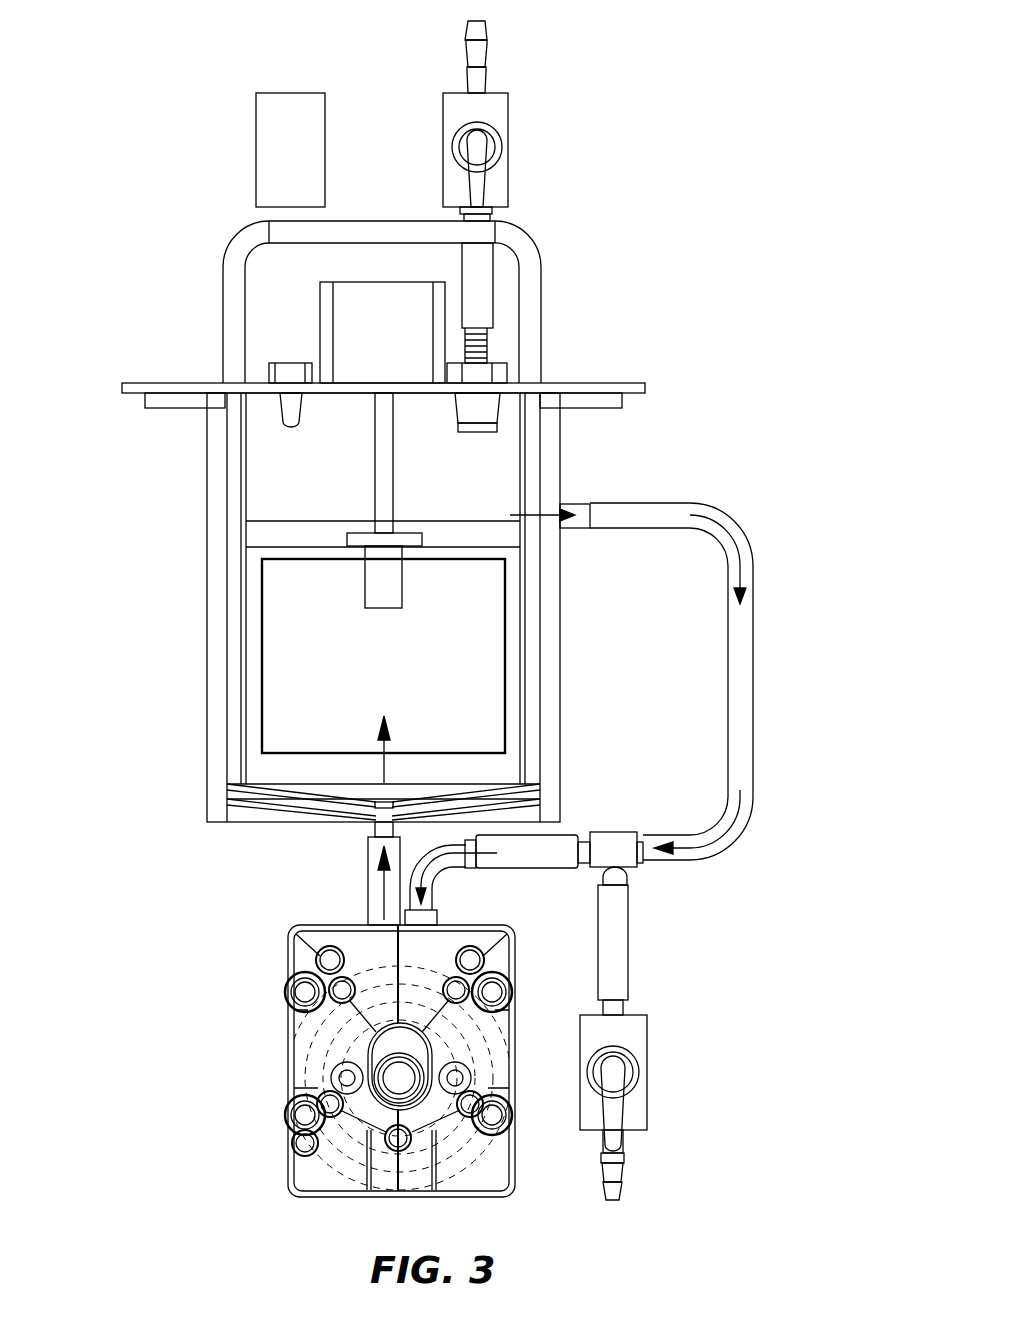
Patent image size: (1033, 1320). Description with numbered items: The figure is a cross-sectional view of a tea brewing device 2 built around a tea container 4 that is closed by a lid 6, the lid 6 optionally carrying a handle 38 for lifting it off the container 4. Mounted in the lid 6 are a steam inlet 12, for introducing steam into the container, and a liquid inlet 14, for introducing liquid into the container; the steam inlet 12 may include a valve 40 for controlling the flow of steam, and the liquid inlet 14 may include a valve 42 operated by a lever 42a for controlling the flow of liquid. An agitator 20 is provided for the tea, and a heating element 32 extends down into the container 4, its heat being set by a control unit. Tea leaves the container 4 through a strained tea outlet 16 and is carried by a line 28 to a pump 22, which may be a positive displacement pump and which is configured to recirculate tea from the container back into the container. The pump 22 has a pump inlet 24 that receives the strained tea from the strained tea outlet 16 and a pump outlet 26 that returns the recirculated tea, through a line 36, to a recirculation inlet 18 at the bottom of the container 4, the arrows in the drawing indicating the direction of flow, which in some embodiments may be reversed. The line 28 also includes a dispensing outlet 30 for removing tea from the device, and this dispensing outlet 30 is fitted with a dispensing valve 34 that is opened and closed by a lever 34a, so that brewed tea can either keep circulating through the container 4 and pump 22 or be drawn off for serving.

The device 2 is at (126, 176).
The tea container 4 is at (213, 575).
The lid 6 is at (645, 390).
The steam inlet 12 is at (295, 373).
The liquid inlet 14 is at (487, 355).
The strained tea outlet 16 is at (577, 503).
The recirculation inlet 18 is at (375, 828).
The agitator 20 is at (415, 297).
The pump 22 is at (290, 1062).
The pump inlet 24 is at (430, 918).
The pump outlet 26 is at (380, 920).
The line 28 is at (742, 692).
The dispensing outlet 30 is at (618, 940).
The heating element 32 is at (383, 455).
The dispensing valve 34 is at (652, 1079).
The lever 34a is at (618, 1105).
The line 36 is at (375, 873).
The handle 38 is at (398, 230).
The valve 40 is at (268, 185).
The valve 42 is at (519, 121).
The lever 42a is at (482, 148).